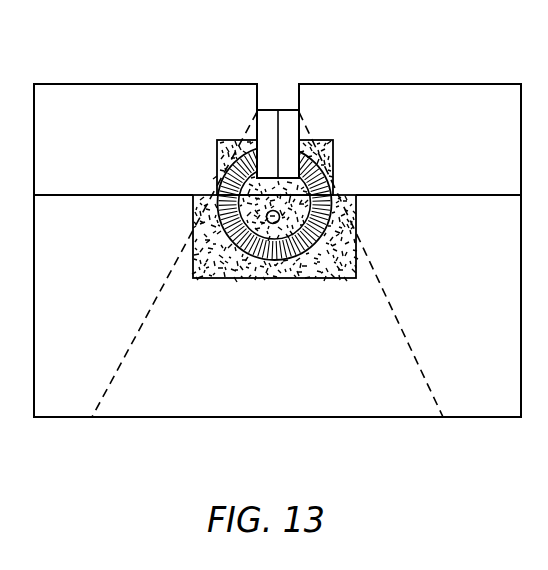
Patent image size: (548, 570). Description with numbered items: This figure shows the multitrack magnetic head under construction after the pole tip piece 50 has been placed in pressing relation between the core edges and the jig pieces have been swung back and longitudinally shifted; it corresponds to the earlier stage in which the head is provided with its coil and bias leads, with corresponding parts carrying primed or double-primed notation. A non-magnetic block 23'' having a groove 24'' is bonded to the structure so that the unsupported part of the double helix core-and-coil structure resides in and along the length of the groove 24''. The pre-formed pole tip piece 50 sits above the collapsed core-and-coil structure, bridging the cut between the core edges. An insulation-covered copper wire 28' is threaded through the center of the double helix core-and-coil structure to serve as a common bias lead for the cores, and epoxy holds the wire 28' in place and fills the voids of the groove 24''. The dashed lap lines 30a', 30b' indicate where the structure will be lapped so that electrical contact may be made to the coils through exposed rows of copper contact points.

The pole tip piece 50 is at (281, 100).
The insulation-covered copper wire 28' is at (330, 189).
The lap line 30a' is at (174, 264).
The lap line 30b' is at (380, 264).
The groove 24'' is at (268, 246).
The non-magnetic block 23'' is at (277, 250).